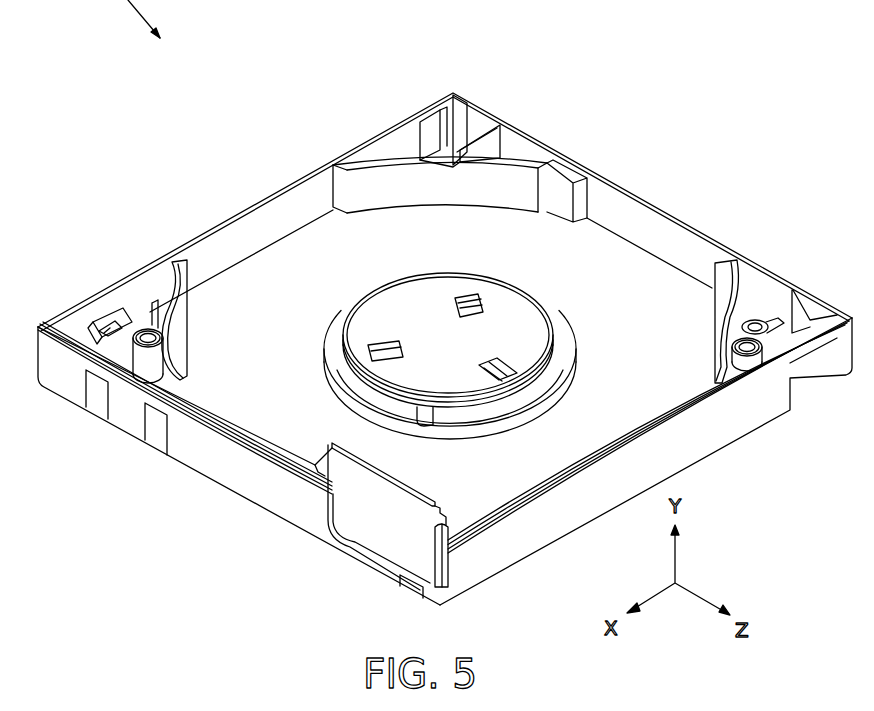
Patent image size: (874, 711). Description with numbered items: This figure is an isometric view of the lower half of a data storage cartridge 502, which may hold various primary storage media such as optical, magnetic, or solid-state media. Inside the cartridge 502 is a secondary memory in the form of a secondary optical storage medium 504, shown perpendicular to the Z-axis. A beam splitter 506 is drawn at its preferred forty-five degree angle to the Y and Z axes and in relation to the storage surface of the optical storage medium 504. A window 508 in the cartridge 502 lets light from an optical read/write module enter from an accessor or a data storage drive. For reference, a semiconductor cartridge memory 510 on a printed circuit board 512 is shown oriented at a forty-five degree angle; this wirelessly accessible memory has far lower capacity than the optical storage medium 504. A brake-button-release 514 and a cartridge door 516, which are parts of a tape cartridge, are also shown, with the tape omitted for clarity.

The data storage cartridge 502 is at (664, 212).
The secondary optical storage medium 504 is at (487, 150).
The beam splitter 506 is at (452, 157).
The window 508 is at (423, 123).
The semiconductor cartridge memory 510 is at (93, 338).
The printed circuit board 512 is at (128, 328).
The brake-button-release 514 is at (373, 290).
The cartridge door 516 is at (373, 525).